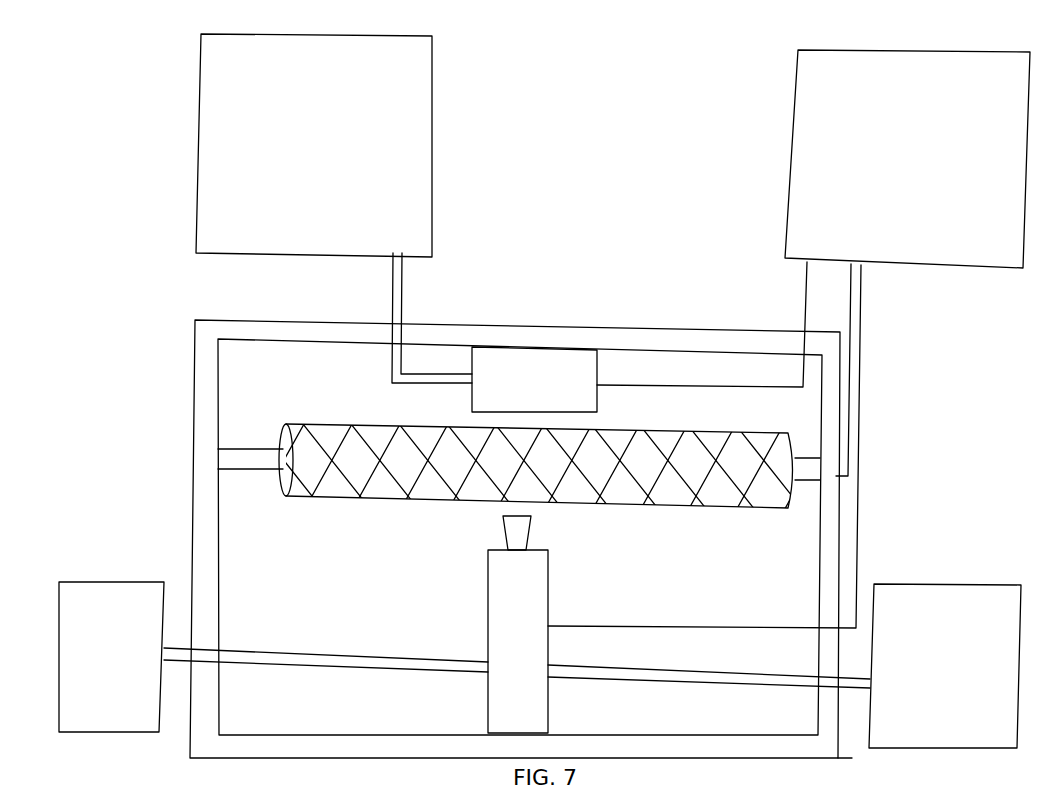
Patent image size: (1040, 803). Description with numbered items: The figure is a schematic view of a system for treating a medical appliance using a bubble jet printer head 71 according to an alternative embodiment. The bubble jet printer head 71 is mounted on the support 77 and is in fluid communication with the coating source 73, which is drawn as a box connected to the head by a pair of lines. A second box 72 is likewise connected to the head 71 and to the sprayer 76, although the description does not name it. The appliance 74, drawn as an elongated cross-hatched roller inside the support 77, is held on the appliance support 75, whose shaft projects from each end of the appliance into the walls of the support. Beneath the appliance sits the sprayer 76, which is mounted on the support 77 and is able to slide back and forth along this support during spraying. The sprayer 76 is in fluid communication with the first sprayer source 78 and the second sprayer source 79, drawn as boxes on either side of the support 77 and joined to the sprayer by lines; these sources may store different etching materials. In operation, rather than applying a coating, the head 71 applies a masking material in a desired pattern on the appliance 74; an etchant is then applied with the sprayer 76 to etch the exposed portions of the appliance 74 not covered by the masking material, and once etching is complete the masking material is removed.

The bubble jet printer head 71 is at (511, 403).
The power supply 72 is at (862, 236).
The coating source 73 is at (280, 230).
The appliance 74 is at (368, 485).
The appliance support 75 is at (269, 454).
The sprayer 76 is at (504, 655).
The support 77 is at (317, 753).
The first sprayer source 78 is at (120, 718).
The second sprayer source 79 is at (946, 724).